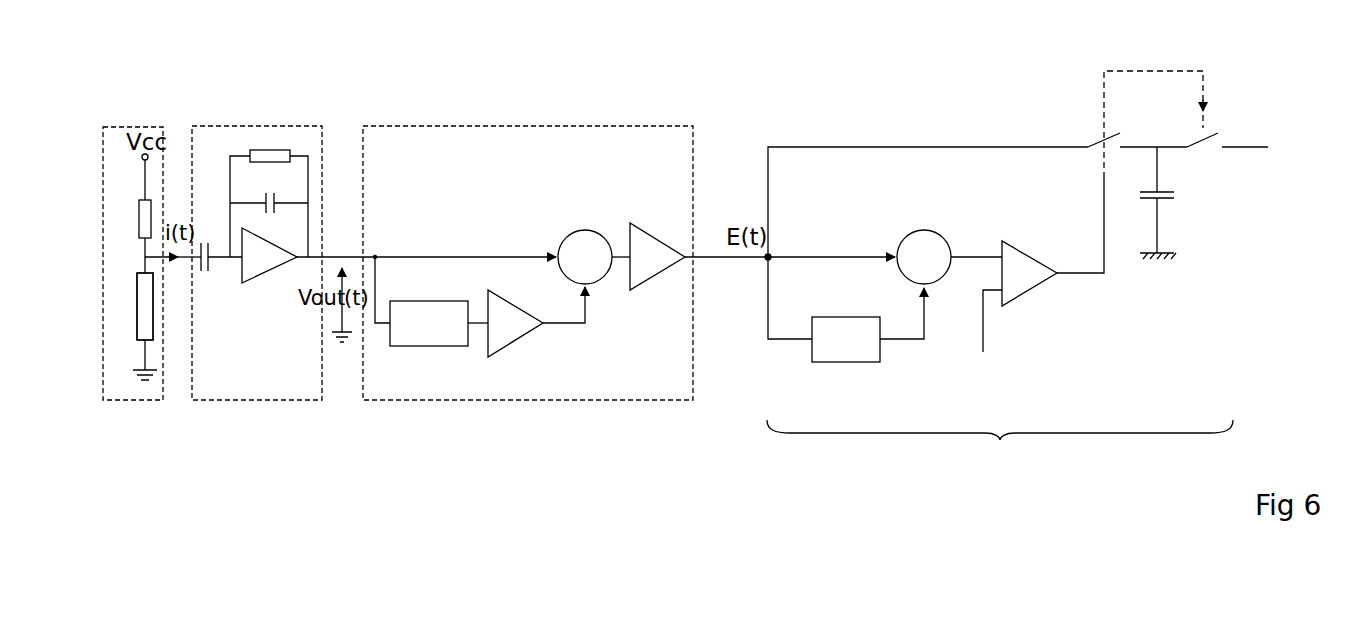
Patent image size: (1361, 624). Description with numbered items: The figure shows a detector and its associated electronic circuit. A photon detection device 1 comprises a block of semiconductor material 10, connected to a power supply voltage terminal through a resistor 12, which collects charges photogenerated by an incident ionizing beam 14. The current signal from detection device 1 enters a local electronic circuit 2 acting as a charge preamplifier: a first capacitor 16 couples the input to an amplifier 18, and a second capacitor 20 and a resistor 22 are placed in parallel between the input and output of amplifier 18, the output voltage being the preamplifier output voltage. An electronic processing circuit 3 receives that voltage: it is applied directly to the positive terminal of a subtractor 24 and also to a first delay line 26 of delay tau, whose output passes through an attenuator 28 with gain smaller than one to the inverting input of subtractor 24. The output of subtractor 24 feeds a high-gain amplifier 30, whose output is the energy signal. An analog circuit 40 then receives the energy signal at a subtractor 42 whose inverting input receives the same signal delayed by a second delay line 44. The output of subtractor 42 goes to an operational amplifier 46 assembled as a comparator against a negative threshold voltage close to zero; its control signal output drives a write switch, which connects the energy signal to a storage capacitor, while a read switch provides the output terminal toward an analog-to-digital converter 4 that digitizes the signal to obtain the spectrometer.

The photon detection device 1 is at (110, 133).
The local electronic circuit 2 is at (210, 133).
The electronic processing circuit 3 is at (438, 133).
The analog-to-digital converter 4 is at (1243, 167).
The block of semiconductor material 10 is at (137, 290).
The resistor 12 is at (139, 217).
The incident ionizing beam 14 is at (128, 326).
The first capacitor 16 is at (205, 272).
The amplifier 18 is at (262, 265).
The second capacitor 20 is at (278, 200).
The resistor 22 is at (275, 152).
The subtractor 24 is at (578, 240).
The first delay line 26 is at (405, 347).
The attenuator 28 is at (507, 335).
The high-gain amplifier 30 is at (643, 238).
The analog circuit 40 is at (1011, 270).
The subtractor 42 is at (916, 234).
The second delay line 44 is at (835, 364).
The operational amplifier 46 is at (1026, 262).